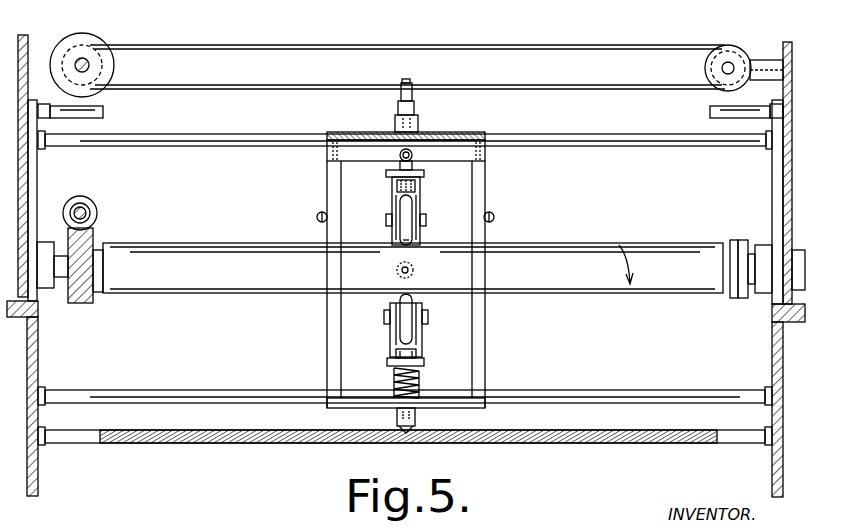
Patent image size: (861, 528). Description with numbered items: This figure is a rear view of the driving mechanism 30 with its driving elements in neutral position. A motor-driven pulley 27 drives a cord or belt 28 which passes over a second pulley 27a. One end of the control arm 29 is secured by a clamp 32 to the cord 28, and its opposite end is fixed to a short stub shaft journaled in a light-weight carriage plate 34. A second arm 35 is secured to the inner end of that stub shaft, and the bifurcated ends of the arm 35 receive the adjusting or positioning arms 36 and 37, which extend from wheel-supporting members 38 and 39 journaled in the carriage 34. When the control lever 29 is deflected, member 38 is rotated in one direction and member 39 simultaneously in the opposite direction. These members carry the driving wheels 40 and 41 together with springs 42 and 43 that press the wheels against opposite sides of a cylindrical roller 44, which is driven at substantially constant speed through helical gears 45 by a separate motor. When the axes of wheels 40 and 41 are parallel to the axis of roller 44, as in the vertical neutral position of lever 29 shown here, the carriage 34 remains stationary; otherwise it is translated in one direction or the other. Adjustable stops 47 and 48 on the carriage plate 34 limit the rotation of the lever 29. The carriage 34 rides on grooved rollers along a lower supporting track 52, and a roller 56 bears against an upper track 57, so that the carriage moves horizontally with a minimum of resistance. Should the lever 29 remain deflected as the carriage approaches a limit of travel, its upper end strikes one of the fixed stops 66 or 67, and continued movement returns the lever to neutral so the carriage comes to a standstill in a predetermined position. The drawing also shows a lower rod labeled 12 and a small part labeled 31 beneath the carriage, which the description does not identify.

The threaded feed screw rod 12 is at (262, 443).
The pulley 27 is at (113, 69).
The pulley 27a is at (706, 70).
The cord or belt 28 is at (503, 36).
The control arm 29 is at (416, 106).
The mechanism 30 is at (374, 332).
The follower nut 31 is at (418, 428).
The clamp 32 is at (412, 81).
The carriage plate 34 is at (480, 187).
The second arm 35 is at (400, 243).
The adjusting or positioning arm 36 is at (420, 203).
The adjusting or positioning arm 37 is at (396, 353).
The wheel-supporting member 38 is at (392, 206).
The wheel-supporting member 39 is at (418, 353).
The driving wheel 40 is at (412, 236).
The driving wheel 41 is at (414, 302).
The spring 42 is at (386, 173).
The spring 43 is at (392, 380).
The cylindrical roller 44 is at (224, 250).
The helical gears 45 is at (96, 210).
The adjustable stop 47 is at (316, 216).
The adjustable stop 48 is at (495, 218).
The supporting track 52 is at (185, 395).
The roller 56 is at (413, 158).
The upper track 57 is at (227, 143).
The stop 66 is at (704, 113).
The stop 67 is at (108, 113).